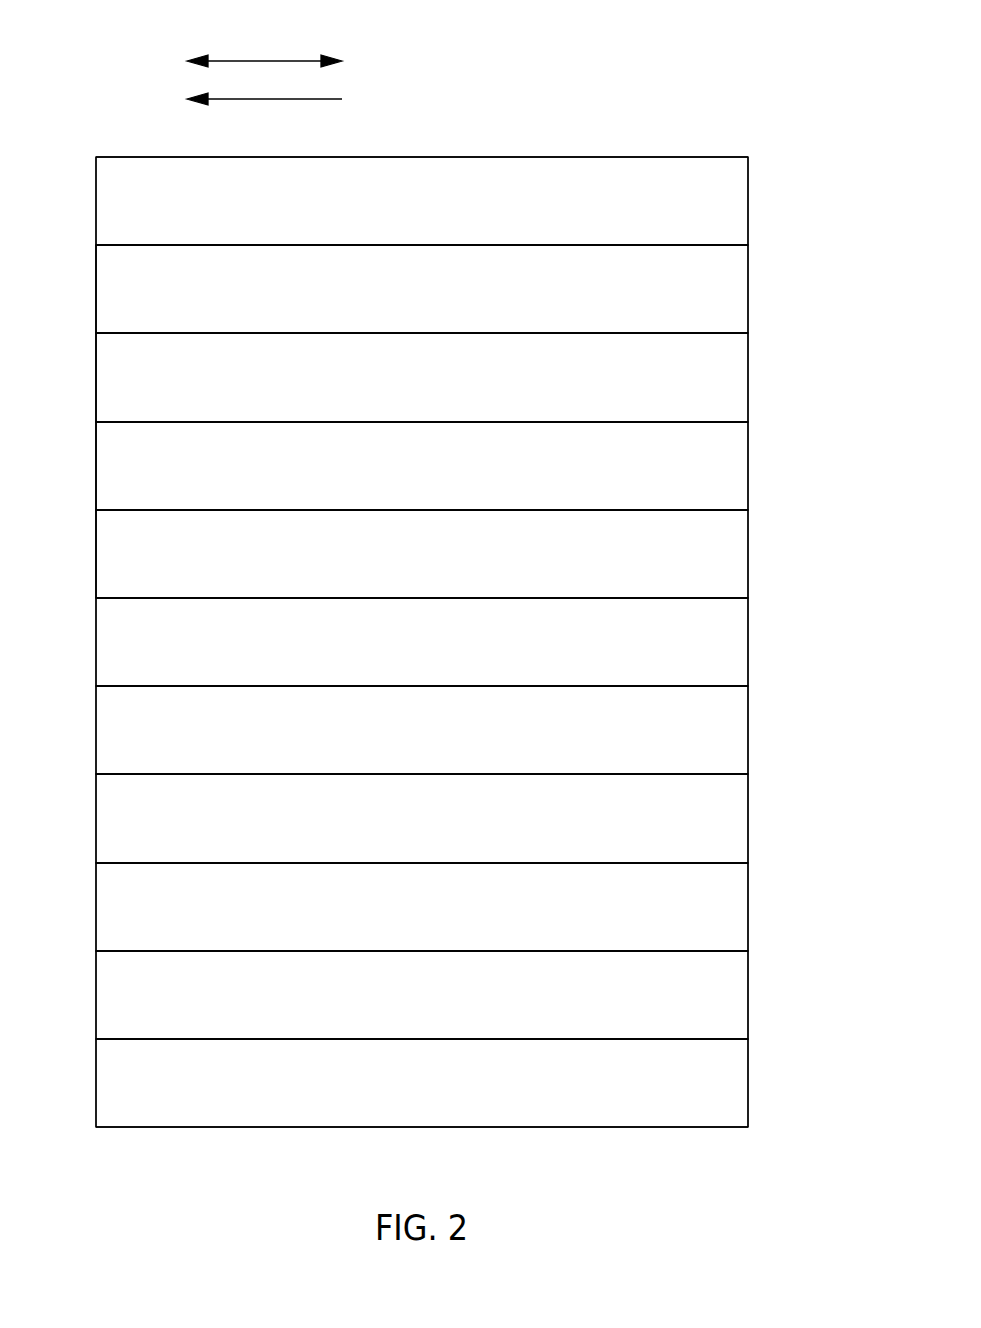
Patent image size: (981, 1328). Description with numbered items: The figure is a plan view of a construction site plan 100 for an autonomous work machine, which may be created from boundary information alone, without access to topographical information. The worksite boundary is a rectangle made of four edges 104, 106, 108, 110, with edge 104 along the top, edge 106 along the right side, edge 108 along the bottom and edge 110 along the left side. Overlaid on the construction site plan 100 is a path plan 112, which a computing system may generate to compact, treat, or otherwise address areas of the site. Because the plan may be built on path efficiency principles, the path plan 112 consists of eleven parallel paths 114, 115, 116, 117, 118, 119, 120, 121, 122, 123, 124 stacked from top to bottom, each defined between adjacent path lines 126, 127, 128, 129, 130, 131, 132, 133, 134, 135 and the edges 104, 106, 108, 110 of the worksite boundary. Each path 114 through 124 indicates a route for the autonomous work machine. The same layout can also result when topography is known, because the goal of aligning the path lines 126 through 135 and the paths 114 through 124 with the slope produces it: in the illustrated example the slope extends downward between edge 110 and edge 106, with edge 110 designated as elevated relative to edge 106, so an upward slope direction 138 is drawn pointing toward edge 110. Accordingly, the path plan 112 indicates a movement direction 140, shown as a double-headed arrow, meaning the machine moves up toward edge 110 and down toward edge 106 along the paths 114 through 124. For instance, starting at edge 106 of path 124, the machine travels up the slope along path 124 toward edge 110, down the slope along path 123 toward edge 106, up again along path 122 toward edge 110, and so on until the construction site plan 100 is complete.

The construction site plan 100 is at (676, 52).
The edge 104 is at (654, 157).
The edge 106 is at (748, 378).
The edge 108 is at (185, 1128).
The edge 110 is at (96, 642).
The path plan 112 is at (125, 473).
The path 114 is at (281, 218).
The path 115 is at (281, 306).
The path 116 is at (281, 394).
The path 117 is at (281, 483).
The path 118 is at (281, 571).
The path 119 is at (281, 659).
The path 120 is at (281, 747).
The path 121 is at (281, 836).
The path 122 is at (281, 924).
The path 123 is at (281, 1012).
The path 124 is at (281, 1100).
The path line 126 is at (532, 244).
The path line 127 is at (532, 332).
The path line 128 is at (532, 421).
The path line 129 is at (532, 509).
The path line 130 is at (532, 597).
The path line 131 is at (532, 685).
The path line 132 is at (532, 773).
The path line 133 is at (532, 862).
The path line 134 is at (532, 950).
The path line 135 is at (532, 1038).
The upward slope direction 138 is at (263, 101).
The movement direction 140 is at (263, 59).